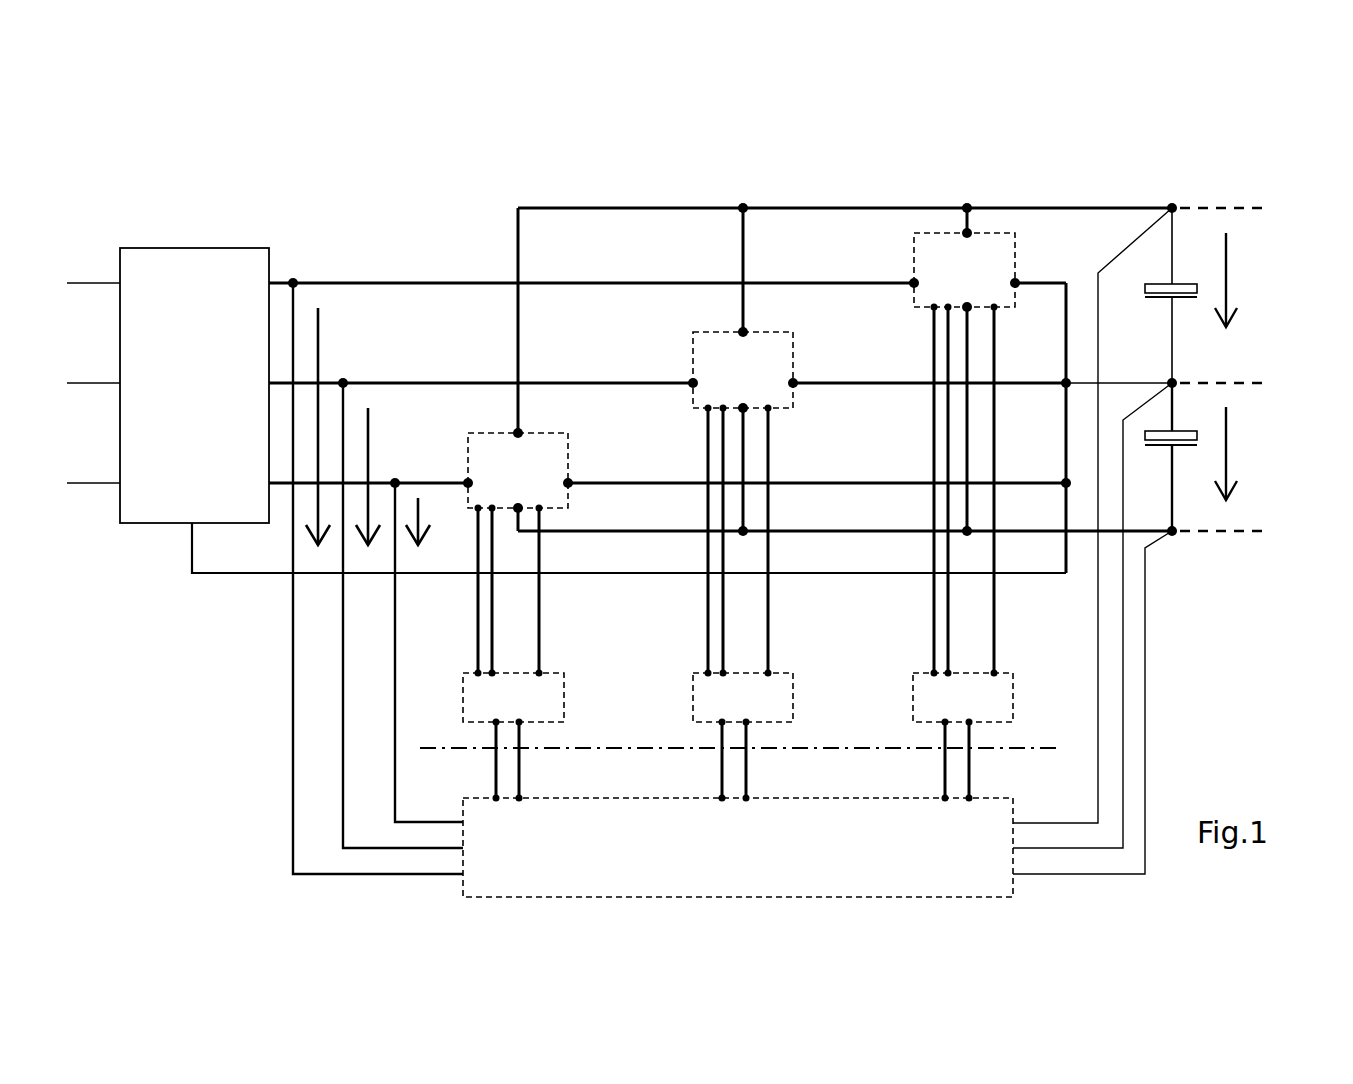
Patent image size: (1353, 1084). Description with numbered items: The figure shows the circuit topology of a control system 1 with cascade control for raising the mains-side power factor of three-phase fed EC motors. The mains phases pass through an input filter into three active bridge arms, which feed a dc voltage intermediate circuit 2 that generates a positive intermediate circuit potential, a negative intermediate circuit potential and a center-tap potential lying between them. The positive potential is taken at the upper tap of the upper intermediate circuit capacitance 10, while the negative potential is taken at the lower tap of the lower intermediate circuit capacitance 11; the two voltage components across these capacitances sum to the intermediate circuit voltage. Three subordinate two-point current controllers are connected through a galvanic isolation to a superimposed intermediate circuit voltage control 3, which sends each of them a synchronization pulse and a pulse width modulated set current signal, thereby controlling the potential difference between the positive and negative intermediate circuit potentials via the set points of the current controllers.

The control system 1 is at (418, 148).
The dc voltage intermediate circuit 2 is at (830, 197).
The superimposed intermediate circuit voltage control 3 is at (818, 857).
The intermediate circuit capacitance 10 is at (1162, 275).
The intermediate circuit capacitance 11 is at (1180, 452).